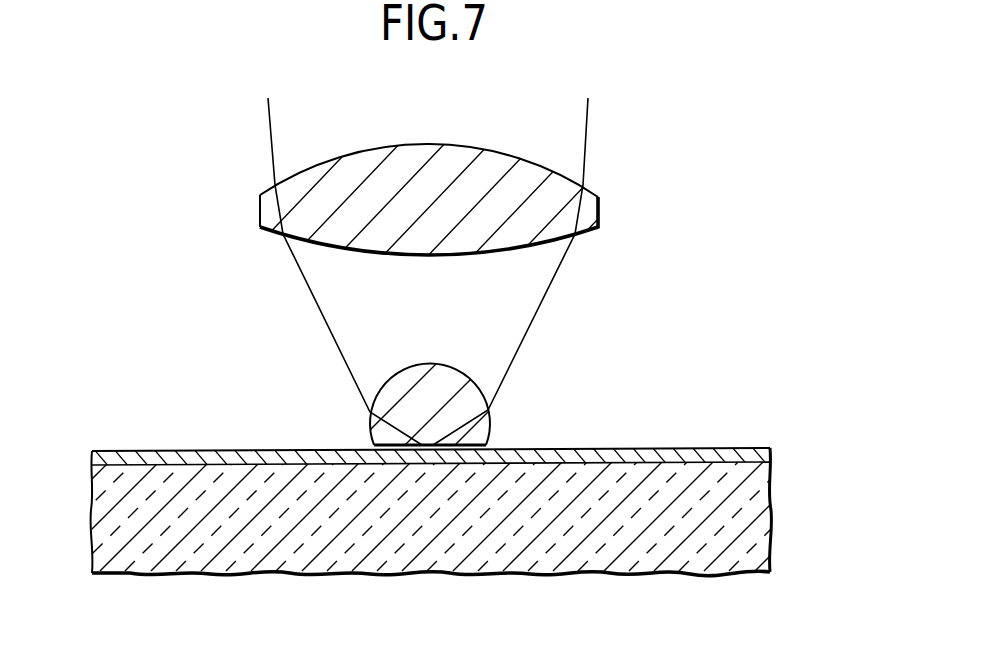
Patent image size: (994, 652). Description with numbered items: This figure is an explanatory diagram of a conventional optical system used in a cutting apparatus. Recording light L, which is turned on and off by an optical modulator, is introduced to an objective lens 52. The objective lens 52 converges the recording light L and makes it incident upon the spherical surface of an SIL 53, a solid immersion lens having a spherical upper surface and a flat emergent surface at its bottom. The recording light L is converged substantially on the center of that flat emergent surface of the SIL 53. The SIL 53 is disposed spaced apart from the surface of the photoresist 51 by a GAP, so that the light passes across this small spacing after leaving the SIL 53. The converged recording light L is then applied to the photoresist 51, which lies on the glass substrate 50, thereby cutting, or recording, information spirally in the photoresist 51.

The recording light L is at (589, 112).
The objective lens 52 is at (586, 221).
The SIL 53 is at (447, 381).
The gap GAP is at (494, 447).
The photoresist 51 is at (757, 453).
The glass substrate 50 is at (757, 523).